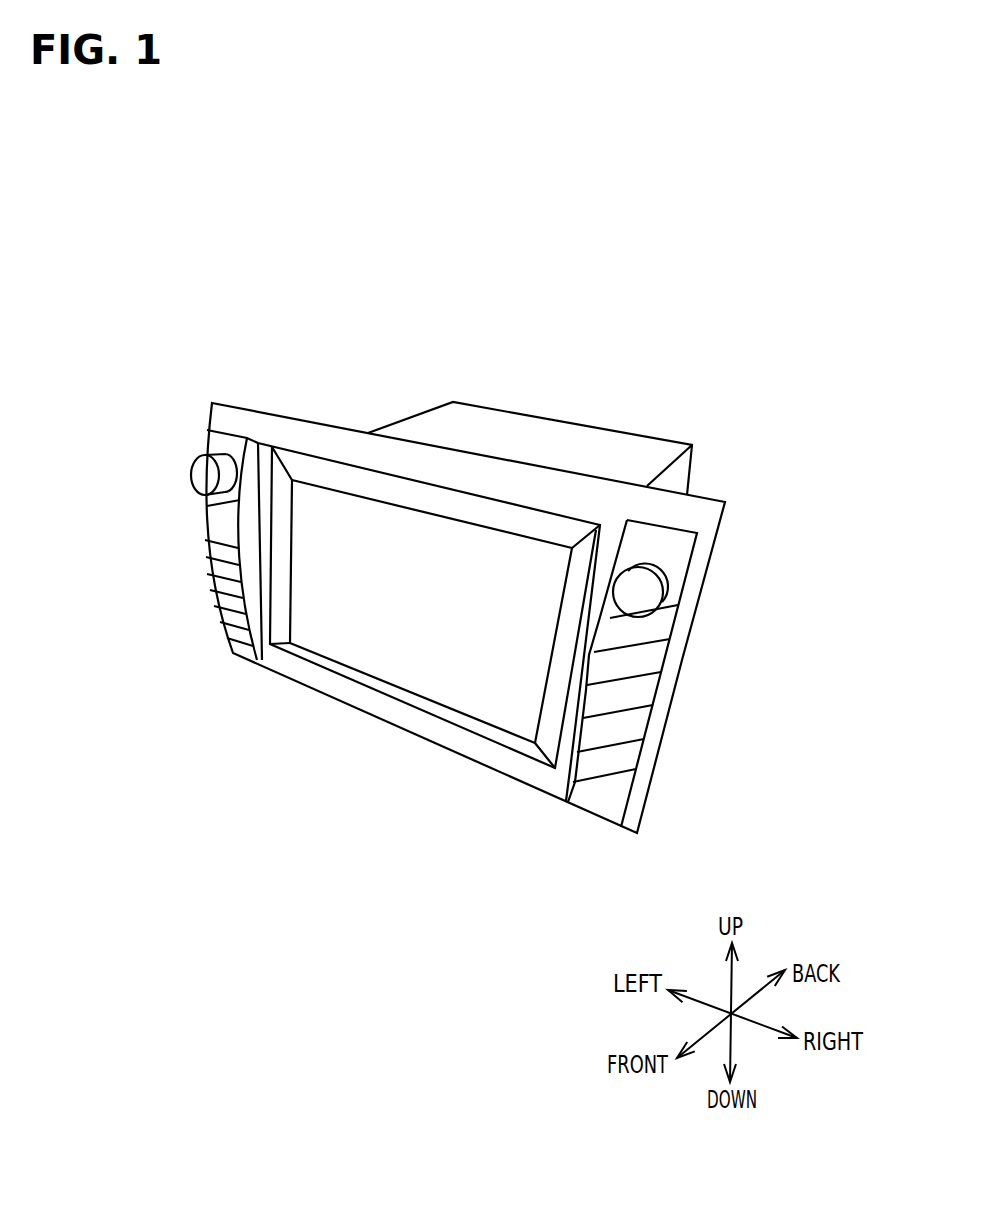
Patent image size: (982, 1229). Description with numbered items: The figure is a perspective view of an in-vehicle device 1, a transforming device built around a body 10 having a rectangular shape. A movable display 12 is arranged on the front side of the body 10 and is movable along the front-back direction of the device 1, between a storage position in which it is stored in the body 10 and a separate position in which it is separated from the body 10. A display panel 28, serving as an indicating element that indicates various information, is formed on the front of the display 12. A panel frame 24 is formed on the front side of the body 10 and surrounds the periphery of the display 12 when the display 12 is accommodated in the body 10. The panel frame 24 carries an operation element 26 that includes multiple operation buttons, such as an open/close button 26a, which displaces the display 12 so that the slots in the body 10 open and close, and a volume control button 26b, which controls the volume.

The in-vehicle device 1 is at (666, 338).
The body 10 is at (400, 420).
The movable display 12 is at (477, 510).
The panel frame 24 is at (684, 622).
The operation element 26 is at (446, 481).
The open/close button 26a is at (230, 652).
The volume control button 26b is at (190, 439).
The display panel 28 is at (378, 652).